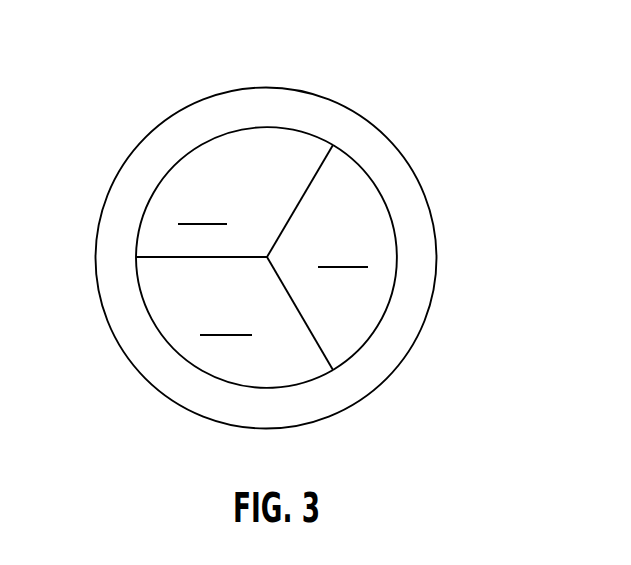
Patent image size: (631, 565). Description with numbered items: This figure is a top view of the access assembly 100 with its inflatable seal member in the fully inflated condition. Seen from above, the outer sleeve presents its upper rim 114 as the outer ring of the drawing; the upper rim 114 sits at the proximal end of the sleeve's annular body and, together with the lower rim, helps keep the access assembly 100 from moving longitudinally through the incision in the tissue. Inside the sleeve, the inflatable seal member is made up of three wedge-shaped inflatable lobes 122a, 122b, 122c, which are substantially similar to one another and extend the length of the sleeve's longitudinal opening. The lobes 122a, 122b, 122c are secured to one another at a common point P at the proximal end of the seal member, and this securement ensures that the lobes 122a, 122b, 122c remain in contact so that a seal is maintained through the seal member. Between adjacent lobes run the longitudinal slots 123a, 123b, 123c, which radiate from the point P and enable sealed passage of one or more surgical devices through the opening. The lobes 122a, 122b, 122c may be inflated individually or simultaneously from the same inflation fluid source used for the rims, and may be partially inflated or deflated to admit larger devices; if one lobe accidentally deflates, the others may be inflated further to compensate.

The access assembly 100 is at (367, 48).
The upper rim 114 is at (396, 169).
The point P is at (207, 141).
The inflatable lobe 122a is at (234, 192).
The inflatable lobe 122b is at (234, 323).
The inflatable lobe 122c is at (357, 257).
The longitudinal slot 123a is at (311, 177).
The longitudinal slot 123b is at (142, 218).
The longitudinal slot 123c is at (313, 338).